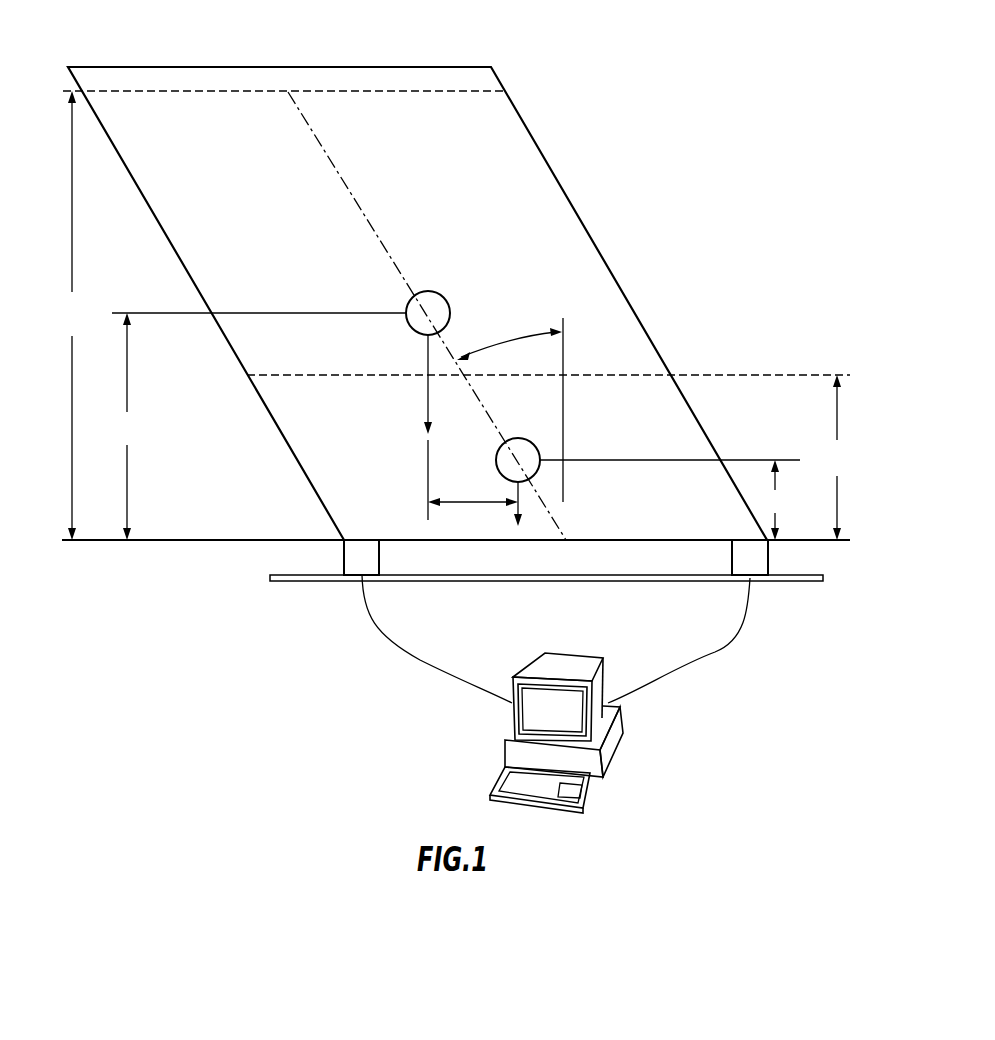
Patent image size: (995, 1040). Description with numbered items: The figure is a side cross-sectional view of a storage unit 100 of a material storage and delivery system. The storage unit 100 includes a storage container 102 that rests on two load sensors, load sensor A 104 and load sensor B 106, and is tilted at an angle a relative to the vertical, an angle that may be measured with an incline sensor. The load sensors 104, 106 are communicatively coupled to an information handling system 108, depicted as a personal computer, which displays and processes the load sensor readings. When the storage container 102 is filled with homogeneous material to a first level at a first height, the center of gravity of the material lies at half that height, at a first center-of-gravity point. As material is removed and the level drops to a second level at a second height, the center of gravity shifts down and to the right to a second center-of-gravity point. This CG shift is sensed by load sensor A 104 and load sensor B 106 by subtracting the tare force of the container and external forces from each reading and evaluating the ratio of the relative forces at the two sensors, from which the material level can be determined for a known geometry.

The storage unit 100 is at (600, 62).
The storage container 102 is at (526, 120).
The load sensor A 104 is at (383, 561).
The load sensor B 106 is at (768, 562).
The information handling system 108 is at (613, 753).